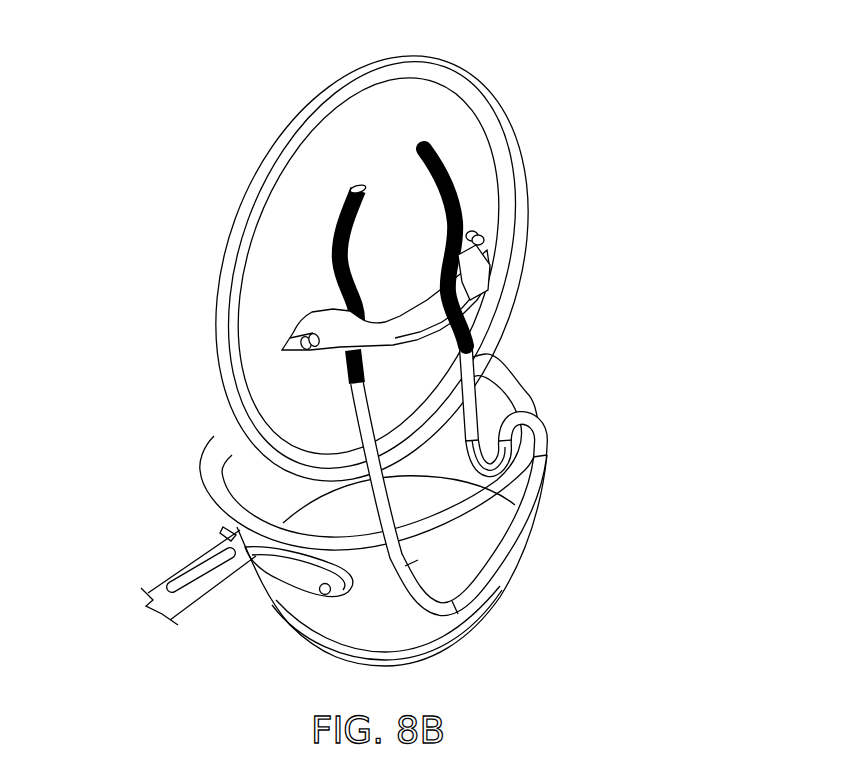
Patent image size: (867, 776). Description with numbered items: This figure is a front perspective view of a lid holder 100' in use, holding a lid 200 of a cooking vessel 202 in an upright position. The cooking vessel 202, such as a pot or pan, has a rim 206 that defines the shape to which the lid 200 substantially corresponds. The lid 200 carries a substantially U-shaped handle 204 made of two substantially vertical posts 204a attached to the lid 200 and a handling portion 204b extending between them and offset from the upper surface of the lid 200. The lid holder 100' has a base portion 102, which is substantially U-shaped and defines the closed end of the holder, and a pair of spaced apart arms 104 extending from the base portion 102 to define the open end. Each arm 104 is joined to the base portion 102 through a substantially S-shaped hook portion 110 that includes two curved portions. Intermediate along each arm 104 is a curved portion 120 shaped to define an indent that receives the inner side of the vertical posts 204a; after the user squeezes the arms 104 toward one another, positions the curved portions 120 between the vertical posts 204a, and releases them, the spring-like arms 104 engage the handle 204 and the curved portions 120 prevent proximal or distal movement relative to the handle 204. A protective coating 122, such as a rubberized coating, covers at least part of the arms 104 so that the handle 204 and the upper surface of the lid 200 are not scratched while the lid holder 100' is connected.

The lid holder 100' is at (425, 361).
The base portion 102 is at (507, 570).
The spaced apart arms 104 is at (363, 423).
The hook portion 110 is at (533, 430).
The curved portion 120 is at (399, 245).
The protective coating 122 is at (340, 219).
The lid 200 is at (467, 120).
The cooking vessel 202 is at (317, 620).
The handle 204 is at (456, 250).
The vertical posts 204a is at (460, 258).
The handling portion 204b is at (445, 310).
The rim 206 is at (513, 402).